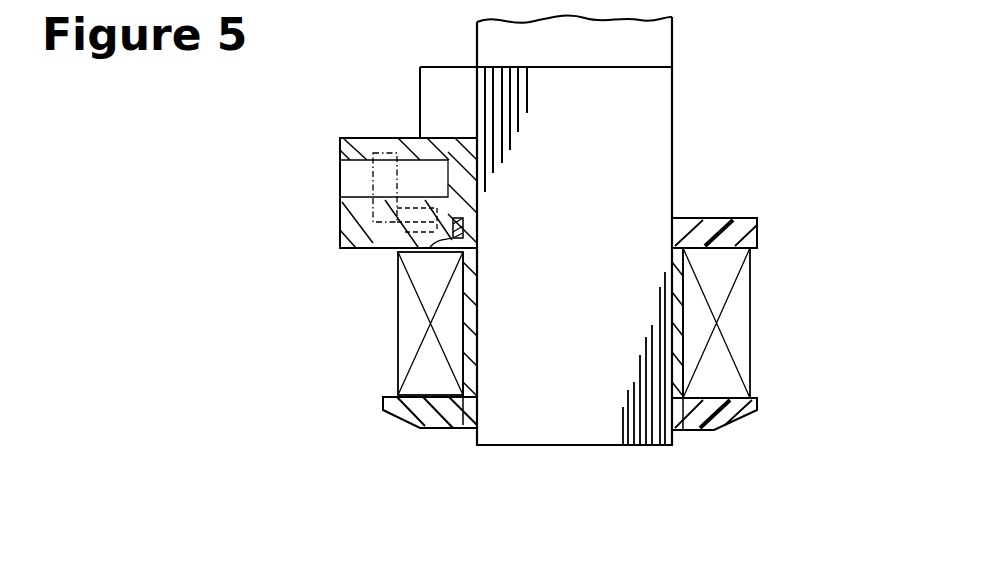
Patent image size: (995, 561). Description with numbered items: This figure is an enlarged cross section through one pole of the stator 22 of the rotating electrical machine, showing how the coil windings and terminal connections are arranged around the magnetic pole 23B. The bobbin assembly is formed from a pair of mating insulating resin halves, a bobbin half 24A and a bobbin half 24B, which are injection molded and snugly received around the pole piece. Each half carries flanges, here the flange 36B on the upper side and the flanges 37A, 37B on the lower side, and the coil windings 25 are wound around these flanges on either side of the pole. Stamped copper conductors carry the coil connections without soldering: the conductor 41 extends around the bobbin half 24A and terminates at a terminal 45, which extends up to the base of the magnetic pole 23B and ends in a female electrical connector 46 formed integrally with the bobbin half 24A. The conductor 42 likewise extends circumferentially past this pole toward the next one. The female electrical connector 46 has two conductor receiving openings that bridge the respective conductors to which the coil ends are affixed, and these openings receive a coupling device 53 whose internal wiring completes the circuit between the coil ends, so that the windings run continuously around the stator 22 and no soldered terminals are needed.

The stator 22 is at (654, 447).
The magnetic pole 23B is at (676, 123).
The bobbin half 24A is at (432, 430).
The bobbin half 24B is at (726, 431).
The coil windings 25 is at (751, 293).
The flange 36B is at (745, 218).
The flange 37A is at (413, 428).
The flange 37B is at (740, 418).
The conductor 41 is at (352, 250).
The conductor 42 is at (440, 246).
The terminal 45 is at (348, 180).
The female electrical connector 46 is at (376, 137).
The coupling device 53 is at (349, 185).